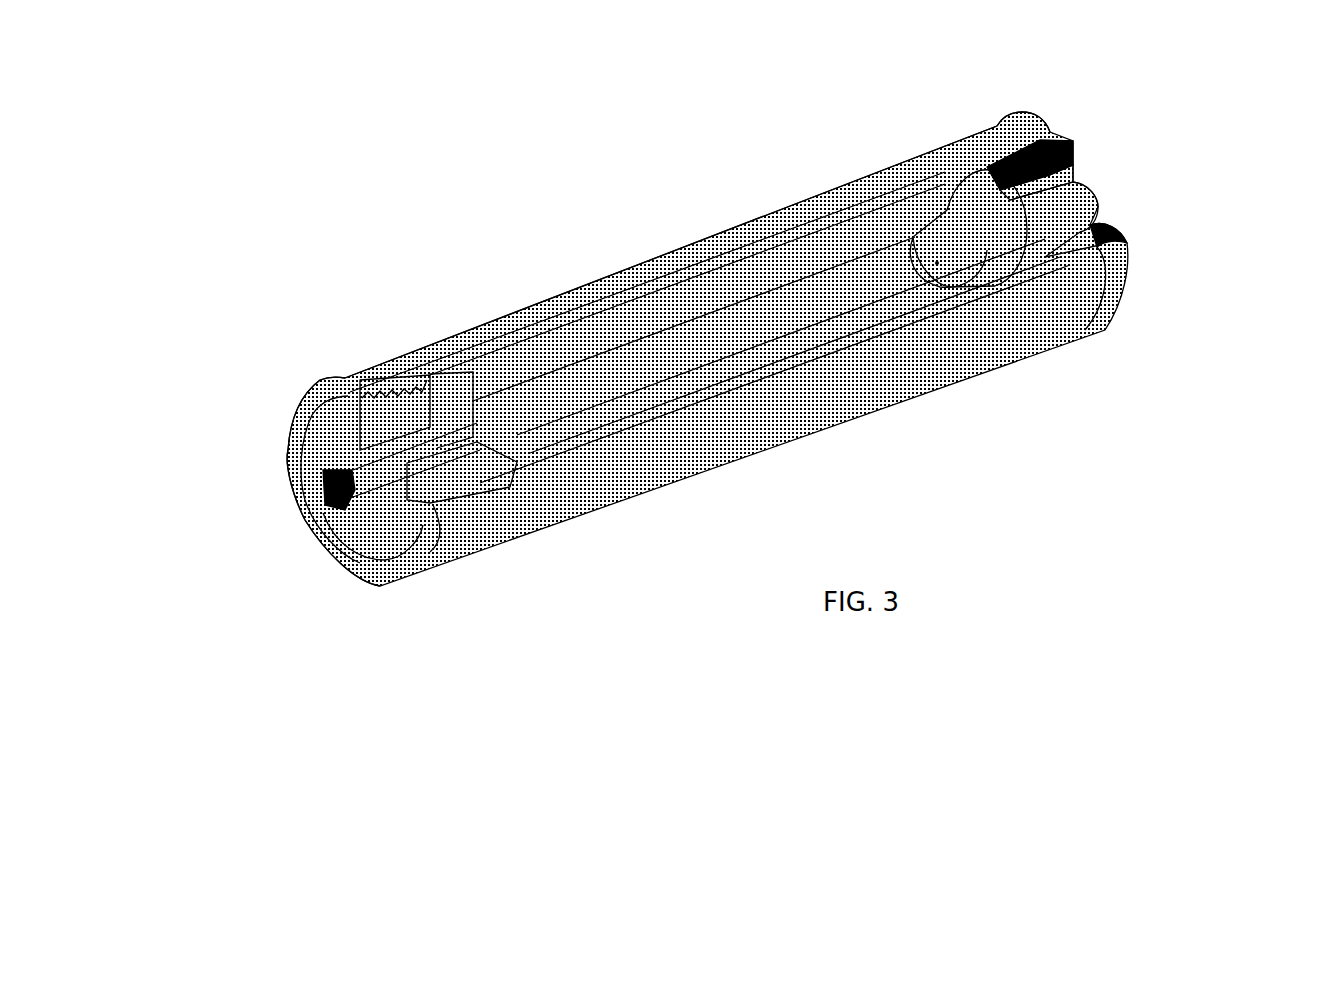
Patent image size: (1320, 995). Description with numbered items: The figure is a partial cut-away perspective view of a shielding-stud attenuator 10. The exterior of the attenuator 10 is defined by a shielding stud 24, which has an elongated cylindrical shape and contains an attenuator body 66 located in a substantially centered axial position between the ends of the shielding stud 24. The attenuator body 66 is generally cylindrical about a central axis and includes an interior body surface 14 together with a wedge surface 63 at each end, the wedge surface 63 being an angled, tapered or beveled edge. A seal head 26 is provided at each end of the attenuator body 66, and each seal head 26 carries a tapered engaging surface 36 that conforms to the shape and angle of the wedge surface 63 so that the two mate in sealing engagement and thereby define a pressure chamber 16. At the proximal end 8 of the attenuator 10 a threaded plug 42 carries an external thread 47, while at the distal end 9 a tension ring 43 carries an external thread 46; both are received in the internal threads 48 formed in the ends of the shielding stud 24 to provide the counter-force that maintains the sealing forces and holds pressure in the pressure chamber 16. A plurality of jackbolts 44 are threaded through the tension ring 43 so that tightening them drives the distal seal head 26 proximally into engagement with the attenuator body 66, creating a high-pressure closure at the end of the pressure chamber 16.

The proximal end 8 is at (248, 530).
The distal end 9 is at (1188, 165).
The shielding-stud attenuator 10 is at (430, 204).
The interior body surface 14 is at (633, 352).
The pressure chamber 16 is at (747, 338).
The shielding stud 24 is at (808, 190).
The seal head 26 is at (1090, 187).
The tapered engaging surface 36 is at (955, 198).
The threaded plug 42 is at (368, 541).
The tension ring 43 is at (1080, 162).
The jackbolts 44 is at (1123, 231).
The external thread 46 is at (1057, 140).
The external thread 47 is at (410, 392).
The internal threads 48 is at (1070, 262).
The wedge surface 63 is at (420, 460).
The attenuator body 66 is at (624, 298).